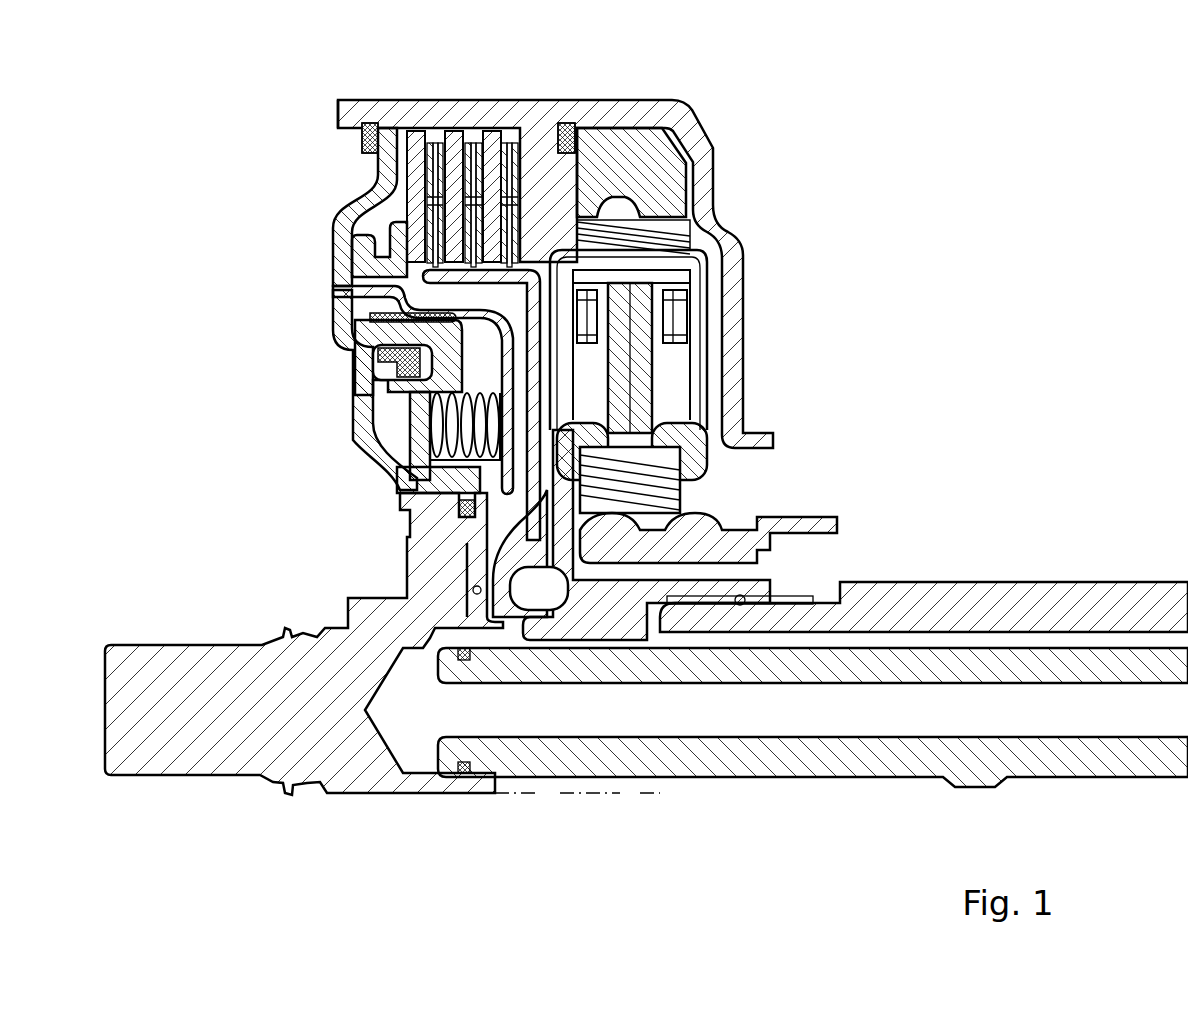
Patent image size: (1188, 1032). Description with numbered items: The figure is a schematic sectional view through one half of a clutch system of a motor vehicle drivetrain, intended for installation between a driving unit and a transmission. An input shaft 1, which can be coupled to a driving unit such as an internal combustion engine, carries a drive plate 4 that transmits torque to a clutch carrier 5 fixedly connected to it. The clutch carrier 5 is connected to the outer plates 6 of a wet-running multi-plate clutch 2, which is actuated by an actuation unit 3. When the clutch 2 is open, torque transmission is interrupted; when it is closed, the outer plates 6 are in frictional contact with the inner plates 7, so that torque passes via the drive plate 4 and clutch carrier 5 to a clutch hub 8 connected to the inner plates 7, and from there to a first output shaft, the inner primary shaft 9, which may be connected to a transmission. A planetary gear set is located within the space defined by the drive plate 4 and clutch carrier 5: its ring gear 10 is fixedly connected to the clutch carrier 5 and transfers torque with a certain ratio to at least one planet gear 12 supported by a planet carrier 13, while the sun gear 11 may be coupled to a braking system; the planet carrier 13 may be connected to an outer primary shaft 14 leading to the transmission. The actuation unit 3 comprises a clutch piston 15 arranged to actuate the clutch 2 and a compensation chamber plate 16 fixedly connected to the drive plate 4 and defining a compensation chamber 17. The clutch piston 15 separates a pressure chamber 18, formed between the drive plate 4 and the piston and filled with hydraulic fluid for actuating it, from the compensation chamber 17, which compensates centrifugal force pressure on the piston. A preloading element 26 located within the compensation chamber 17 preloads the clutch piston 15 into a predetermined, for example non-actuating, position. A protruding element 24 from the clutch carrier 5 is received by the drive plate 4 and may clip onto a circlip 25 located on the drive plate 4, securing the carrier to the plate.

The input shaft 1 is at (187, 658).
The clutch 2 is at (452, 173).
The actuation unit 3 is at (398, 393).
The drive plate 4 is at (360, 420).
The clutch carrier 5 is at (538, 120).
The outer plates 6 is at (490, 130).
The inner plates 7 is at (509, 143).
The clutch hub 8 is at (533, 390).
The inner primary shaft 9 is at (661, 667).
The ring gear 10 is at (623, 147).
The sun gear 11 is at (687, 537).
The planet gear 12 is at (670, 240).
The planet carrier 13 is at (572, 573).
The outer primary shaft 14 is at (740, 618).
The clutch piston 15 is at (417, 447).
The compensation chamber plate 16 is at (507, 357).
The compensation chamber 17 is at (463, 371).
The pressure chamber 18 is at (396, 430).
The protruding element 24 is at (368, 110).
The circlip 25 is at (368, 142).
The preloading element 26 is at (457, 457).